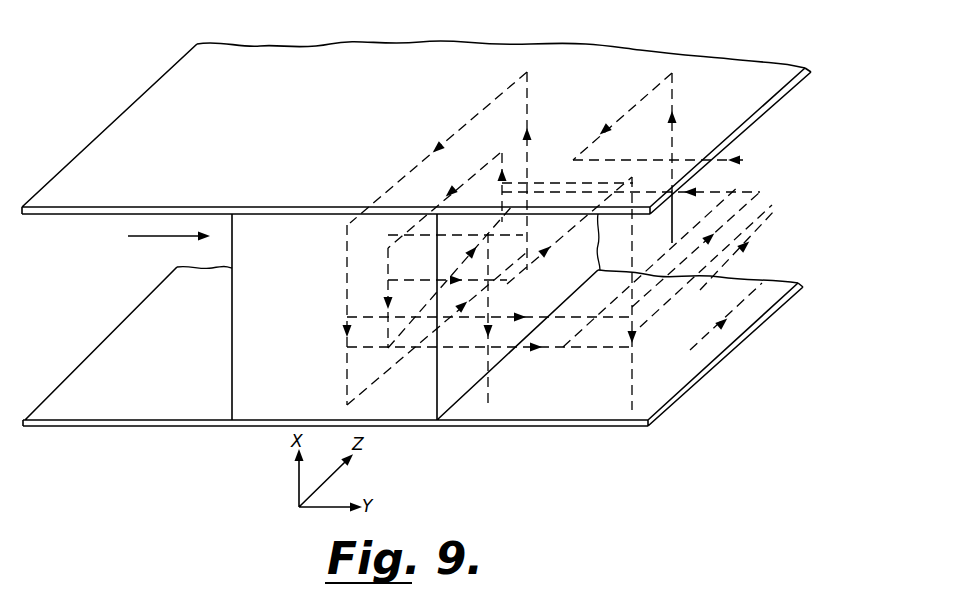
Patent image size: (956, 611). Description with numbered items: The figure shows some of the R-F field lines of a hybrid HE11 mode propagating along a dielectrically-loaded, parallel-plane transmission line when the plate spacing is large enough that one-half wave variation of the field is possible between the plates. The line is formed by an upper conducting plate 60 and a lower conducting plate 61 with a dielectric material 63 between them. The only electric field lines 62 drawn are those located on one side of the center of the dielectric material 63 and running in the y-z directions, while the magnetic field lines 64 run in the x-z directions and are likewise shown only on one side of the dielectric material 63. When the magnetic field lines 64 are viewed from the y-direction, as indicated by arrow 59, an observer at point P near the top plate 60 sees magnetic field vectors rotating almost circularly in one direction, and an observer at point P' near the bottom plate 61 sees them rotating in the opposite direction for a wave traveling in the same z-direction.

The arrow 59 is at (143, 237).
The upper conducting plate 60 is at (115, 120).
The lower conducting plate 61 is at (152, 410).
The electric field lines 62 is at (518, 230).
The dielectric material 63 is at (243, 253).
The magnetic field lines 64 is at (389, 266).